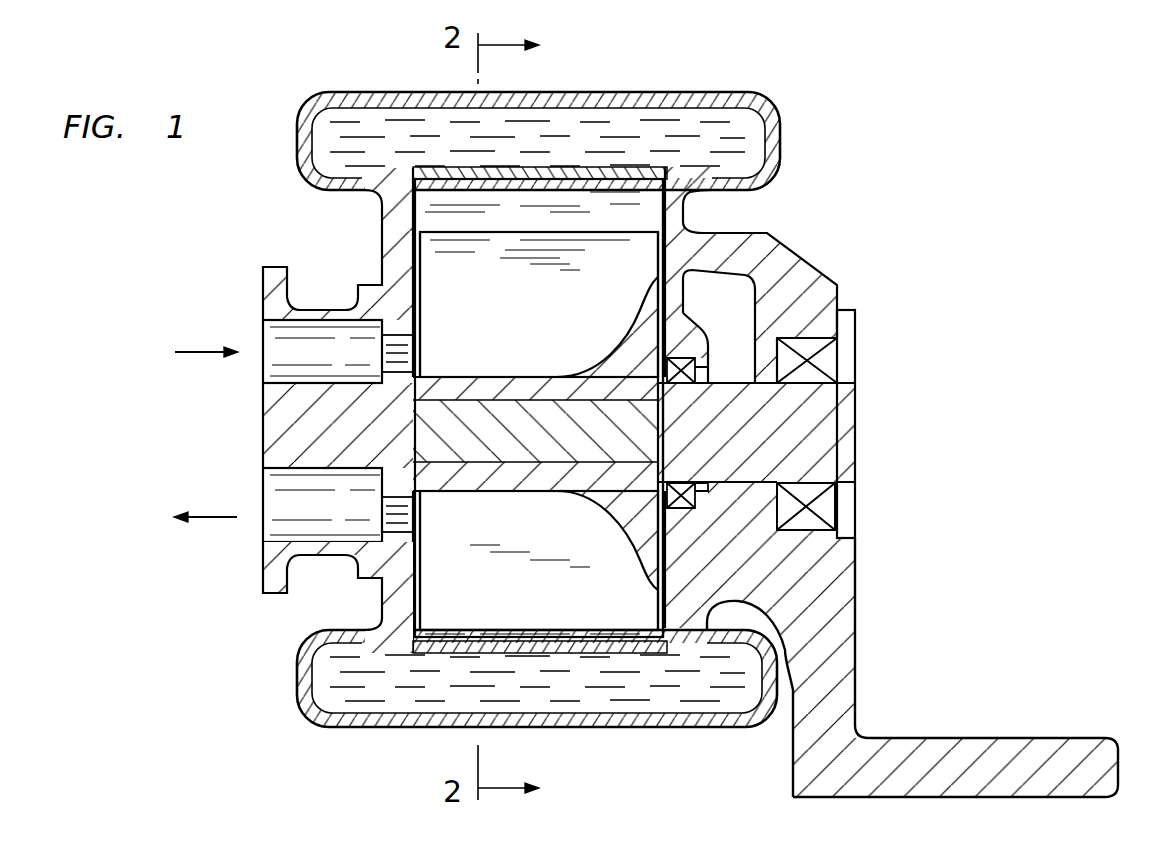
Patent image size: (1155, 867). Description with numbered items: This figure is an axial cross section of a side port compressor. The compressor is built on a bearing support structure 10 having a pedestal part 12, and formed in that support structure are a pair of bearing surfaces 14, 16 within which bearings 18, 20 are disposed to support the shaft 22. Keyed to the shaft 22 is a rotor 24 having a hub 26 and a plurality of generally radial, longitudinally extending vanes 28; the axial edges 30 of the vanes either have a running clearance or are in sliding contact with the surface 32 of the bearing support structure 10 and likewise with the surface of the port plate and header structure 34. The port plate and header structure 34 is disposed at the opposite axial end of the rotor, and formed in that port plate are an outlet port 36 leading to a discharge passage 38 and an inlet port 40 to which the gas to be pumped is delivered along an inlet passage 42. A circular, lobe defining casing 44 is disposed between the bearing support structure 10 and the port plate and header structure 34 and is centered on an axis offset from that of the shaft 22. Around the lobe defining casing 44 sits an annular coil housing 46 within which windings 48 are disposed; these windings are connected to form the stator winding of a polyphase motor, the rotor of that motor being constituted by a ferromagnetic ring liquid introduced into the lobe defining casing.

The bearing support structure 10 is at (858, 565).
The pedestal part 12 is at (938, 737).
The bearing surface 14 is at (704, 332).
The bearing surface 16 is at (840, 305).
The bearing 18 is at (704, 372).
The bearing 20 is at (840, 363).
The shaft 22 is at (856, 420).
The rotor 24 is at (548, 316).
The hub 26 is at (618, 358).
The vanes 28 is at (540, 232).
The axial edges 30 is at (420, 272).
The surface 32 is at (657, 252).
The port plate and header structure 34 is at (372, 284).
The outlet port 36 is at (416, 508).
The discharge passage 38 is at (265, 538).
The inlet port 40 is at (412, 340).
The inlet passage 42 is at (265, 327).
The lobe defining casing 44 is at (522, 176).
The annular coil housing 46 is at (607, 93).
The windings 48 is at (760, 136).